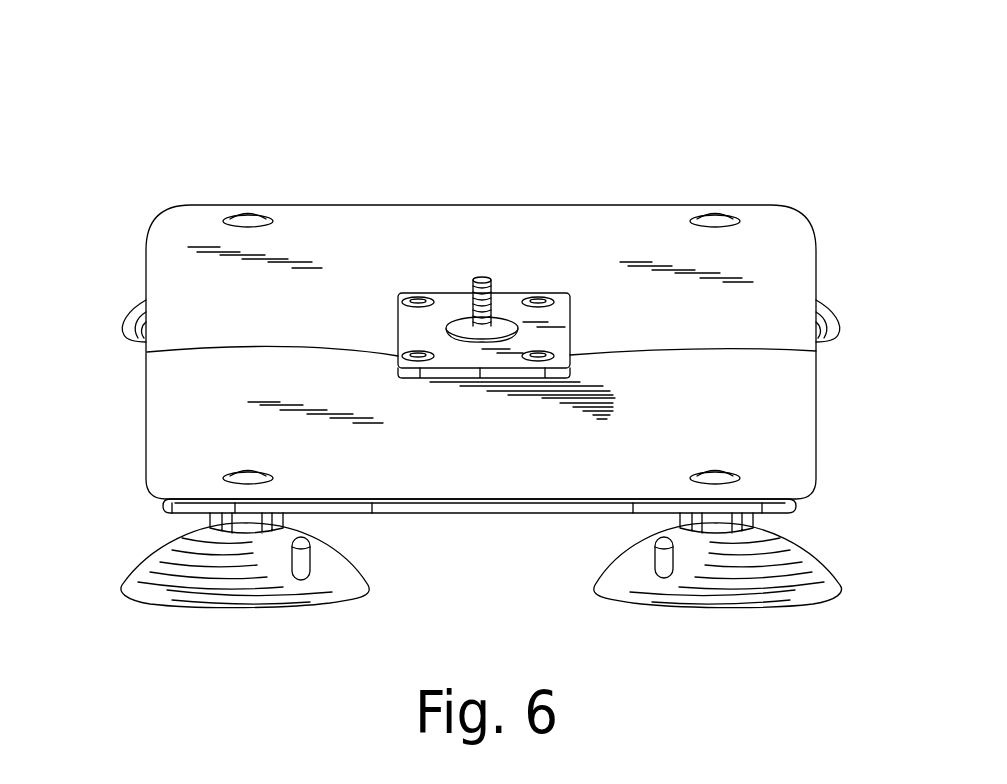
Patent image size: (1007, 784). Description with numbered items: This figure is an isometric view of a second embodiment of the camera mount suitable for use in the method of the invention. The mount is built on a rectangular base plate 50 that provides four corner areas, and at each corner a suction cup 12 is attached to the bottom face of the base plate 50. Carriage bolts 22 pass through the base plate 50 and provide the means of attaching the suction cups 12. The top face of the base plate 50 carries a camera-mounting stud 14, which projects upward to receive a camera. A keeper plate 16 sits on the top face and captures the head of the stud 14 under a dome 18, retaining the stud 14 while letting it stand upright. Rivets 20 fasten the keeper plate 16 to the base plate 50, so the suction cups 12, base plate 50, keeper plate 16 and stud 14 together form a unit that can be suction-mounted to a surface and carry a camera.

The base plate 50 is at (175, 222).
The suction cup 12 is at (146, 318).
The camera-mounting stud 14 is at (482, 278).
The keeper plate 16 is at (460, 298).
The dome 18 is at (502, 322).
The rivets 20 is at (413, 300).
The carriage bolts 22 is at (247, 215).